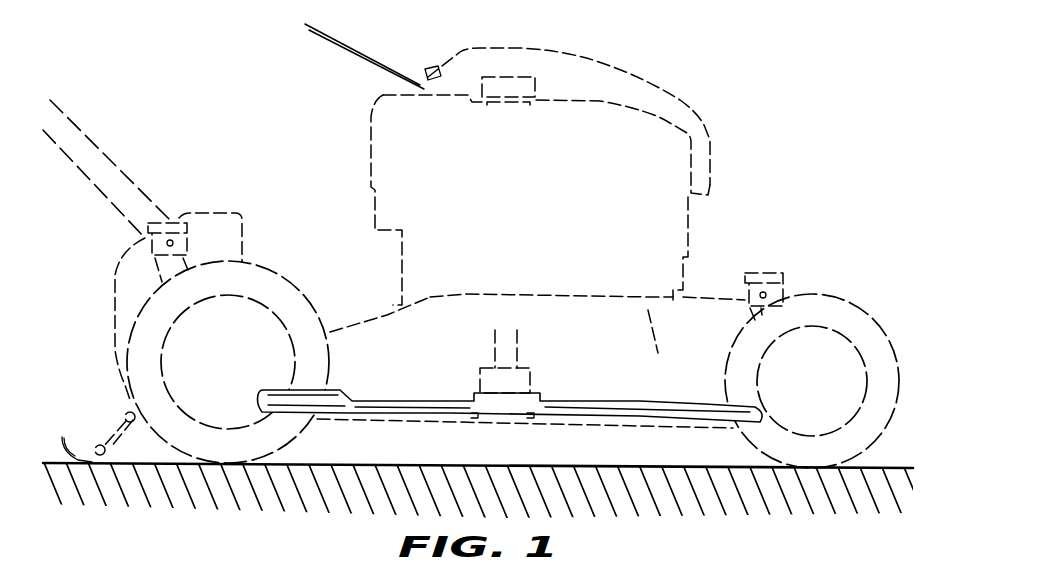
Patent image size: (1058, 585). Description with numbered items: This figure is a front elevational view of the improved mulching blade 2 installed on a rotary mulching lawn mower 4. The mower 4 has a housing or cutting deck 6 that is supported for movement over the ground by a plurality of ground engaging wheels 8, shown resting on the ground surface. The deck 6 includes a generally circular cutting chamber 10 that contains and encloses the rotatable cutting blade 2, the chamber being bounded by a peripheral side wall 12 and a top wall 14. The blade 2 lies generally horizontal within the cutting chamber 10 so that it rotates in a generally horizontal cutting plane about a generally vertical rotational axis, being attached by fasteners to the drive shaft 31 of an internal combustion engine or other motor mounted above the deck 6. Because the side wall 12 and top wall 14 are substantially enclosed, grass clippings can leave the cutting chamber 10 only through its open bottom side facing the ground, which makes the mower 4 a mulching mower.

The mulching blade 2 is at (566, 390).
The mulching lawn mower 4 is at (722, 158).
The housing or cutting deck 6 is at (716, 294).
The ground engaging wheels 8 is at (262, 263).
The cutting chamber 10 is at (413, 350).
The peripheral side wall 12 is at (650, 300).
The top wall 14 is at (535, 293).
The drive shaft 31 is at (491, 355).